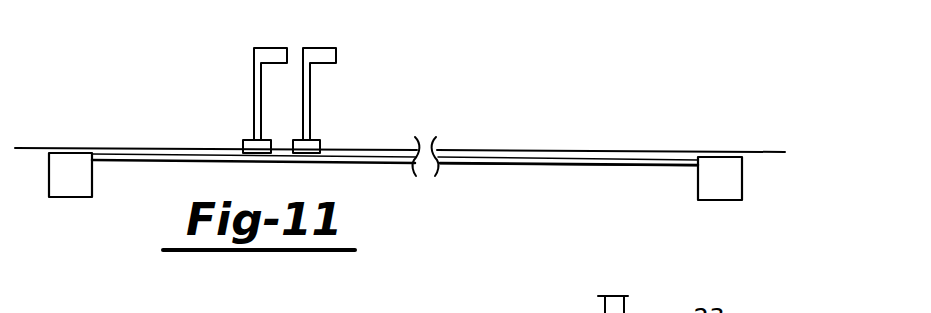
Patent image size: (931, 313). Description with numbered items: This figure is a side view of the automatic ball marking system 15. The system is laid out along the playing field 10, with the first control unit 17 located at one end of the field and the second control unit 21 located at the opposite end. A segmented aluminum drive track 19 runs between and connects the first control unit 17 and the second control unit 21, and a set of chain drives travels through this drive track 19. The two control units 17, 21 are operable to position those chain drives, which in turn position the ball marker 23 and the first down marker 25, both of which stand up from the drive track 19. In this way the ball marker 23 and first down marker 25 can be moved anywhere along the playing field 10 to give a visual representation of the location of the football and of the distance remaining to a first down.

The playing field 10 is at (28, 147).
The ball marking system 15 is at (508, 186).
The first control unit 17 is at (80, 178).
The segmented aluminum drive track 19 is at (628, 162).
The second control unit 21 is at (732, 188).
The ball marker 23 is at (253, 93).
The first down marker 25 is at (308, 88).